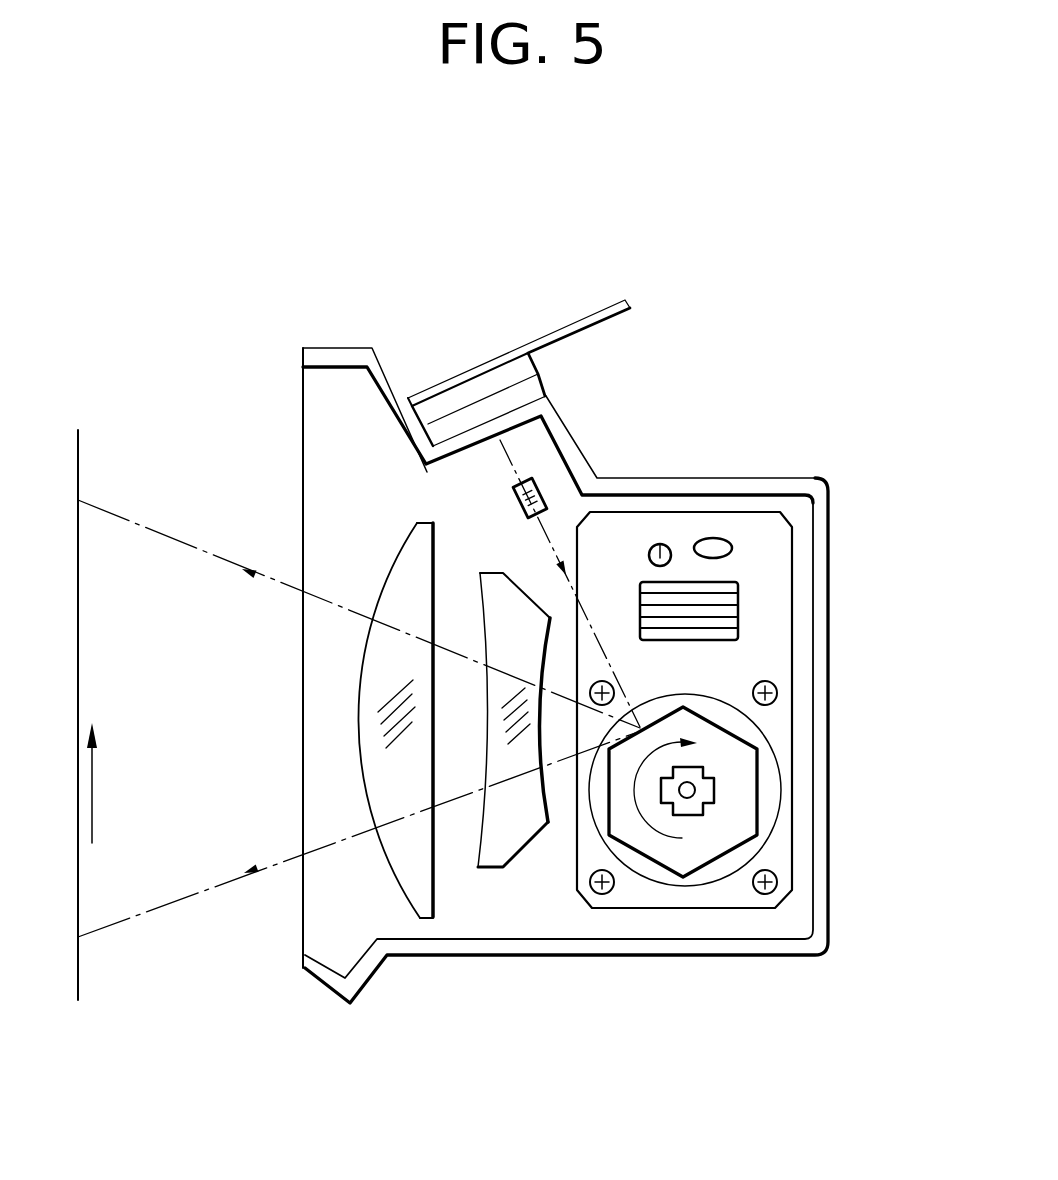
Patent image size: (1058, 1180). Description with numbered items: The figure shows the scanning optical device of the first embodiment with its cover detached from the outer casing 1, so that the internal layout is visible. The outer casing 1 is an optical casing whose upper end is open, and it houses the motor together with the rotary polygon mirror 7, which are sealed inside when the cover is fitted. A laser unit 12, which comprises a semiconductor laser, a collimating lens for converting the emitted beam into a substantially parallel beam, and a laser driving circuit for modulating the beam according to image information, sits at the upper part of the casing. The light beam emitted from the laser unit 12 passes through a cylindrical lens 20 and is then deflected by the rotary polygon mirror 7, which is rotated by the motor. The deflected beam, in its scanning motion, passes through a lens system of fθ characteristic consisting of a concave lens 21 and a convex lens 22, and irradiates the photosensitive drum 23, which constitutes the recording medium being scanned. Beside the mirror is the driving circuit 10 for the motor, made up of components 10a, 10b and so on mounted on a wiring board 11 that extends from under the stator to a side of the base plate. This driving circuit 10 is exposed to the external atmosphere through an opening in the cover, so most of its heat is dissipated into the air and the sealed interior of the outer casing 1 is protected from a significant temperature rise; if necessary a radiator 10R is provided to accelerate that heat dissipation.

The outer casing 1 is at (828, 708).
The rotary polygon mirror 7 is at (733, 815).
The driving circuit 10 is at (749, 465).
The component 10a is at (650, 556).
The component 10b is at (698, 538).
The radiator 10R is at (740, 586).
The wiring board 11 is at (765, 608).
The laser unit 12 is at (466, 388).
The cylindrical lens 20 is at (547, 490).
The concave lens 21 is at (505, 848).
The convex lens 22 is at (423, 893).
The photosensitive drum 23 is at (80, 463).